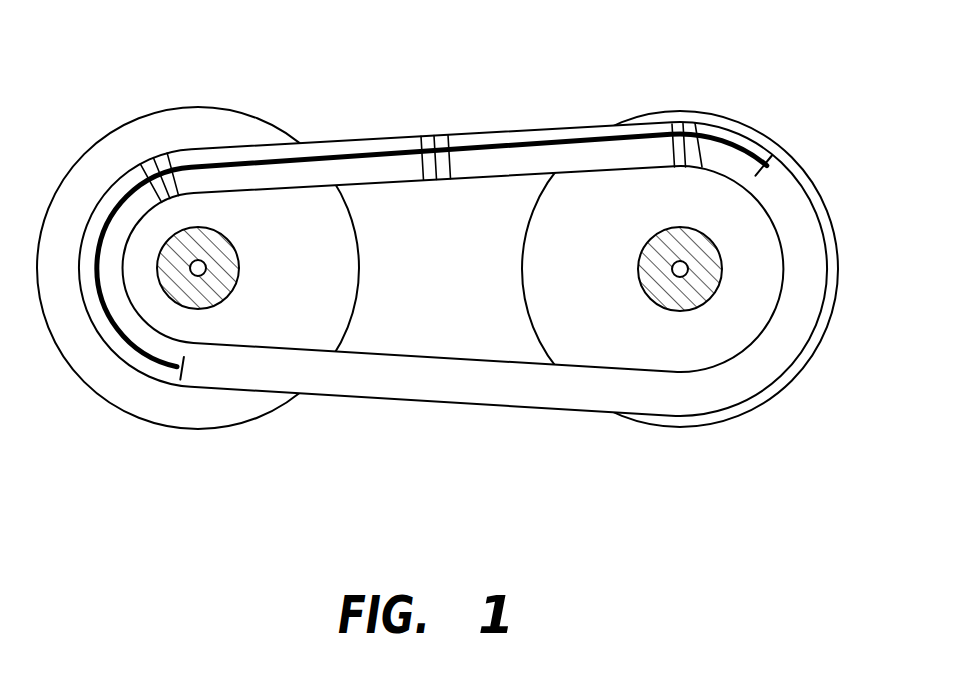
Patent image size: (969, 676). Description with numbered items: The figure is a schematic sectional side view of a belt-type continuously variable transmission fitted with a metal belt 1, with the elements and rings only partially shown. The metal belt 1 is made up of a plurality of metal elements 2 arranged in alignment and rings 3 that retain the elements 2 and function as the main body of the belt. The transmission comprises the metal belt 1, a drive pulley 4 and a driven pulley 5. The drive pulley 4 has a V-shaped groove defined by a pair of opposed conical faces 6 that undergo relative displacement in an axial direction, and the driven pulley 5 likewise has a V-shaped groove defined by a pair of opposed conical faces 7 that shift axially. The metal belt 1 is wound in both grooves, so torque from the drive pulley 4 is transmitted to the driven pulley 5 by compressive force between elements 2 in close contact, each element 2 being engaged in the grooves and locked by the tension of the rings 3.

The metal belt 1 is at (447, 383).
The metal elements 2 is at (431, 177).
The rings 3 is at (527, 136).
The drive pulley 4 is at (249, 108).
The driven pulley 5 is at (846, 244).
The conical faces 6 is at (115, 155).
The conical faces 7 is at (743, 323).